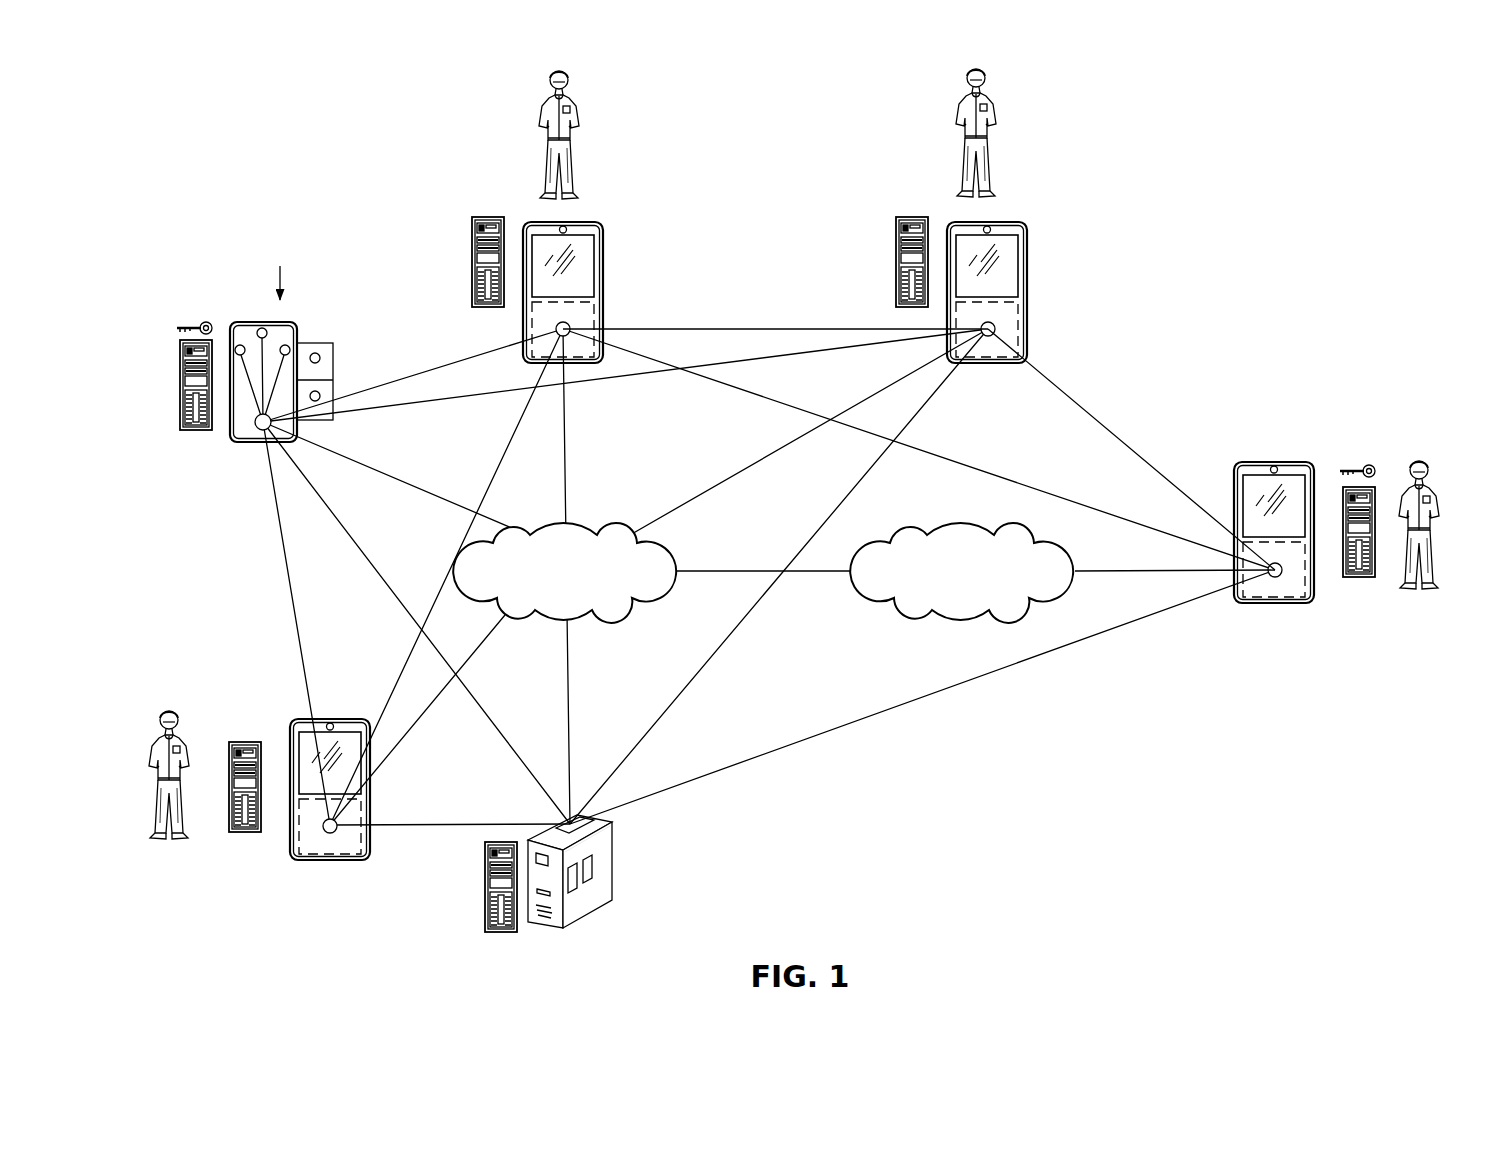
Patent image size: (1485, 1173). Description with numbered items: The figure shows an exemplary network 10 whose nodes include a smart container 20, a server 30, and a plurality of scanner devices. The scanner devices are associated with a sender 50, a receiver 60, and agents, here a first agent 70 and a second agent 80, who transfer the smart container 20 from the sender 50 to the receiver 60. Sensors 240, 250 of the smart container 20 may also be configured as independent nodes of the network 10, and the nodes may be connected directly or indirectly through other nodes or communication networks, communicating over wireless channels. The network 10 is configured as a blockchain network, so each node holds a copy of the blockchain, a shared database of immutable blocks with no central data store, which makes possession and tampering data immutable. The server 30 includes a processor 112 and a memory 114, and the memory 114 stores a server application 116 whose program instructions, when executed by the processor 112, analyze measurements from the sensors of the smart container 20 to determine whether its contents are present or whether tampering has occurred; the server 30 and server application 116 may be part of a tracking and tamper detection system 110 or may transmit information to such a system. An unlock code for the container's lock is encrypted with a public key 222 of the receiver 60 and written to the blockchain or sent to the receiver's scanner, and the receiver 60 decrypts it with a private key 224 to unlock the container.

The network 10 is at (228, 178).
The smart container 20 is at (289, 336).
The server 30 is at (588, 890).
The sender 50 is at (171, 702).
The receiver 60 is at (1418, 447).
The first agent 70 is at (530, 121).
The second agent 80 is at (938, 110).
The tracking and tamper detection system 110 is at (1115, 290).
The processor 112 is at (579, 884).
The memory 114 is at (597, 885).
The server application 116 is at (592, 871).
The public key 222 is at (185, 323).
The private key 224 is at (1354, 466).
The sensor 240 is at (238, 345).
The sensor 250 is at (261, 327).